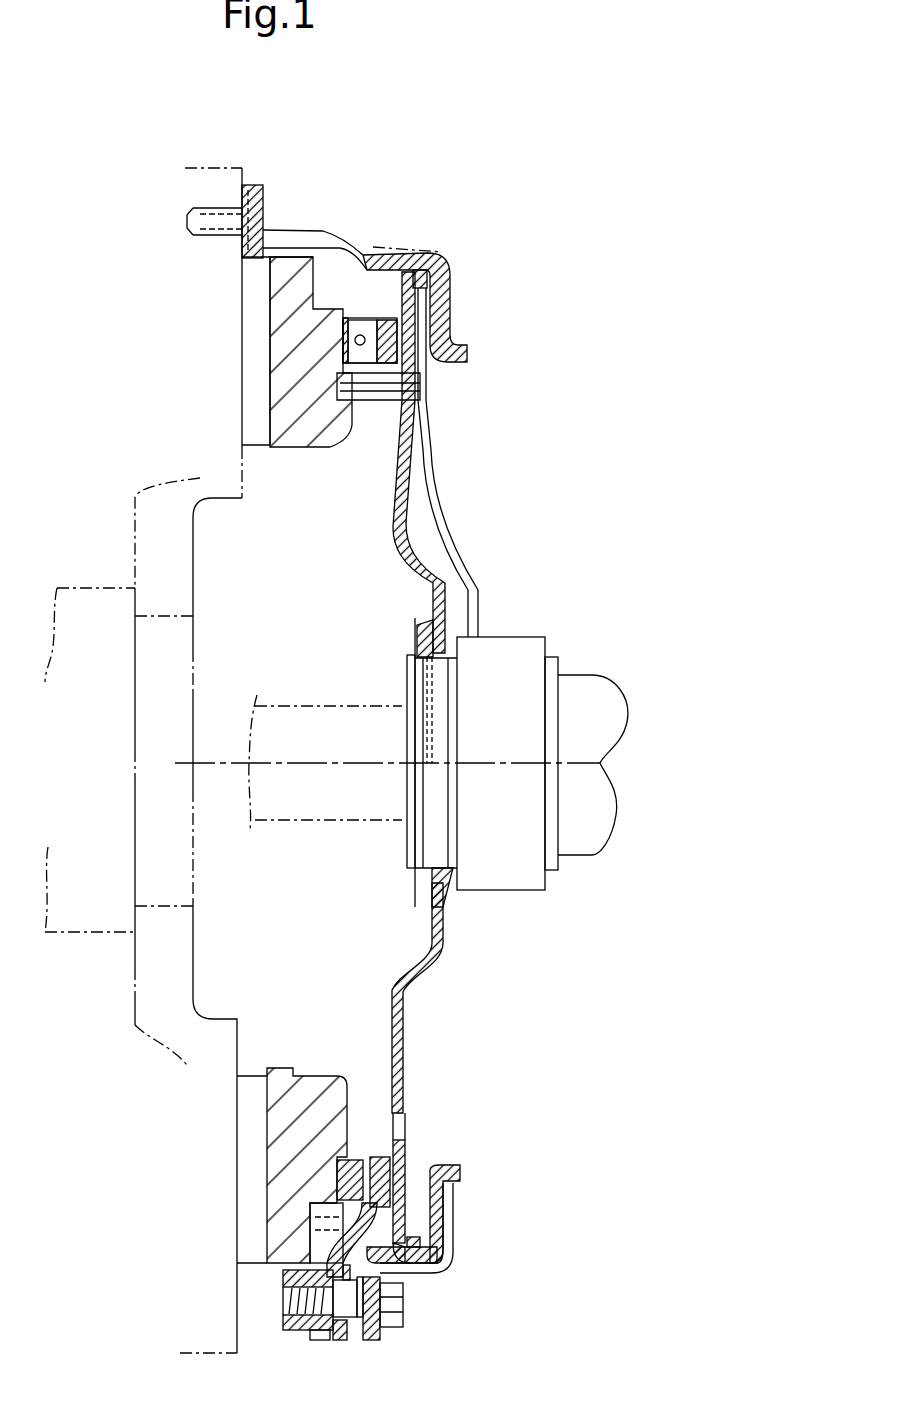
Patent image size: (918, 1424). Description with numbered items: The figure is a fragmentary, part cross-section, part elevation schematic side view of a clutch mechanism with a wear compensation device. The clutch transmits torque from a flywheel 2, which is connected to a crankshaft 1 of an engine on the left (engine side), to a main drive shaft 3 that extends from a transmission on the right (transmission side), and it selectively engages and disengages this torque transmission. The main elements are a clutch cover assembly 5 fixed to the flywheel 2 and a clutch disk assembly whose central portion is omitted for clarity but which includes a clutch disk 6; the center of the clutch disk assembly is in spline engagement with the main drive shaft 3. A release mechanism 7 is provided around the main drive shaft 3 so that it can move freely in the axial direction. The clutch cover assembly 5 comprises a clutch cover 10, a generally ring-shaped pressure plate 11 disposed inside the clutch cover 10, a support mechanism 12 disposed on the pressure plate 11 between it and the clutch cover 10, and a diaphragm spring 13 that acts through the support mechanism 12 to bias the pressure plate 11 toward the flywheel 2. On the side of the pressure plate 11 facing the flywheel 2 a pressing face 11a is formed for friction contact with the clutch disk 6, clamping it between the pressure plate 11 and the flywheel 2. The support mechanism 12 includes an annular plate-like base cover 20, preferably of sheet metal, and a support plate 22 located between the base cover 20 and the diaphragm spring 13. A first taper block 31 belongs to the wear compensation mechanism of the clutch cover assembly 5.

The crankshaft 1 is at (73, 607).
The flywheel 2 is at (202, 185).
The main drive shaft 3 is at (330, 713).
The clutch cover assembly 5 is at (437, 230).
The clutch disk 6 is at (248, 310).
The release mechanism 7 is at (518, 648).
The clutch cover 10 is at (460, 1165).
The pressure plate 11 is at (298, 447).
The pressing face 11a is at (268, 393).
The support mechanism 12 is at (415, 1125).
The diaphragm spring 13 is at (403, 1015).
The base cover 20 is at (405, 1140).
The support plate 22 is at (405, 1205).
The first taper block 31 is at (368, 1137).